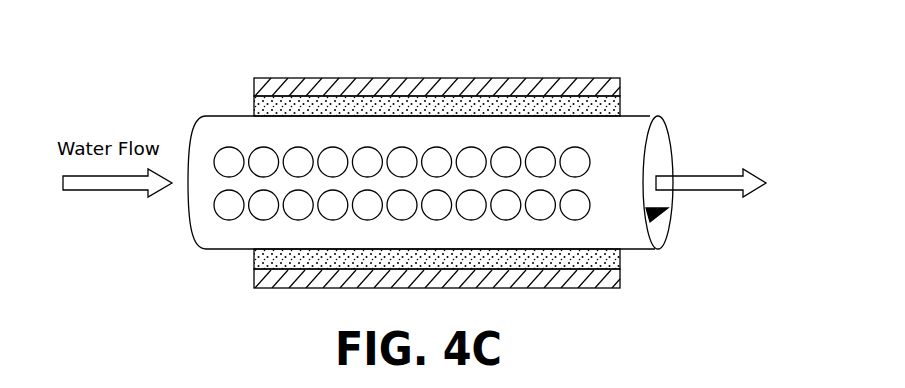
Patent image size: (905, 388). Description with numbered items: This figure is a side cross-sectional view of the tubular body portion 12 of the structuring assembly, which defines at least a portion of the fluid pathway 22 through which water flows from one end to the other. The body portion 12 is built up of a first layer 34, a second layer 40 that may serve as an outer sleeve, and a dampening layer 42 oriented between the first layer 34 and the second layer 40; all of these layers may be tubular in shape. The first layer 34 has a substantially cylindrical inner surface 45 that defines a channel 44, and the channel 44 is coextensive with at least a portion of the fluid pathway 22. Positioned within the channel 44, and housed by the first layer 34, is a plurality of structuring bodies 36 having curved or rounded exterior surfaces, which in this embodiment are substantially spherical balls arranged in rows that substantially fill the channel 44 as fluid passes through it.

The body portion 12 is at (396, 44).
The fluid pathway 22 is at (120, 190).
The first layer 34 is at (667, 214).
The structuring bodies 36 is at (590, 158).
The second layer 40 is at (305, 85).
The dampening layer 42 is at (542, 108).
The channel 44 is at (542, 237).
The inner surface 45 is at (452, 248).